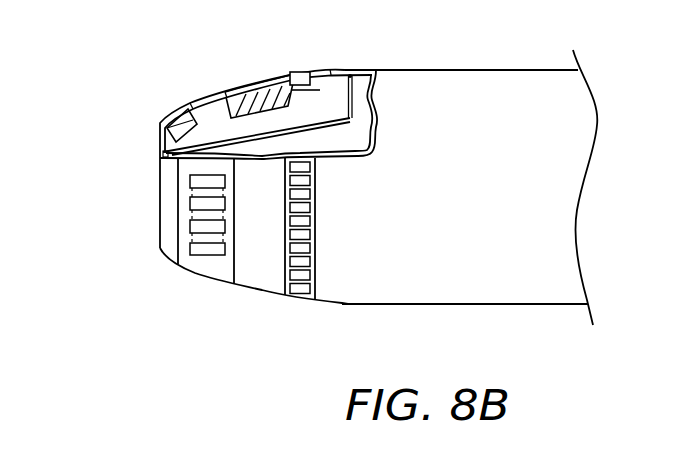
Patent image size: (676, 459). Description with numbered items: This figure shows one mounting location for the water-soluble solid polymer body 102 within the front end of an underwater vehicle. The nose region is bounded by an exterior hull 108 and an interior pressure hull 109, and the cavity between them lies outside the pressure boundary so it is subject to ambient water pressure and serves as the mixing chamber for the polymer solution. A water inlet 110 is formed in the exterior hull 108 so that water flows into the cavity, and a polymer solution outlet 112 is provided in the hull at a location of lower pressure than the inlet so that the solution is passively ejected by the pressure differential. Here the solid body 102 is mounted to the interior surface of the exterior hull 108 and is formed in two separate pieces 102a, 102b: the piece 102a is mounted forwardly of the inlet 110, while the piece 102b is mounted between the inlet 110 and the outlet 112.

The exterior hull 108 is at (478, 70).
The interior pressure hull 109 is at (376, 120).
The water inlet 110 is at (198, 100).
The water-soluble solid polymer body 102 is at (256, 82).
The first piece of polymer body 102a is at (178, 127).
The second piece of polymer body 102b is at (245, 98).
The polymer solution outlet 112 is at (307, 70).